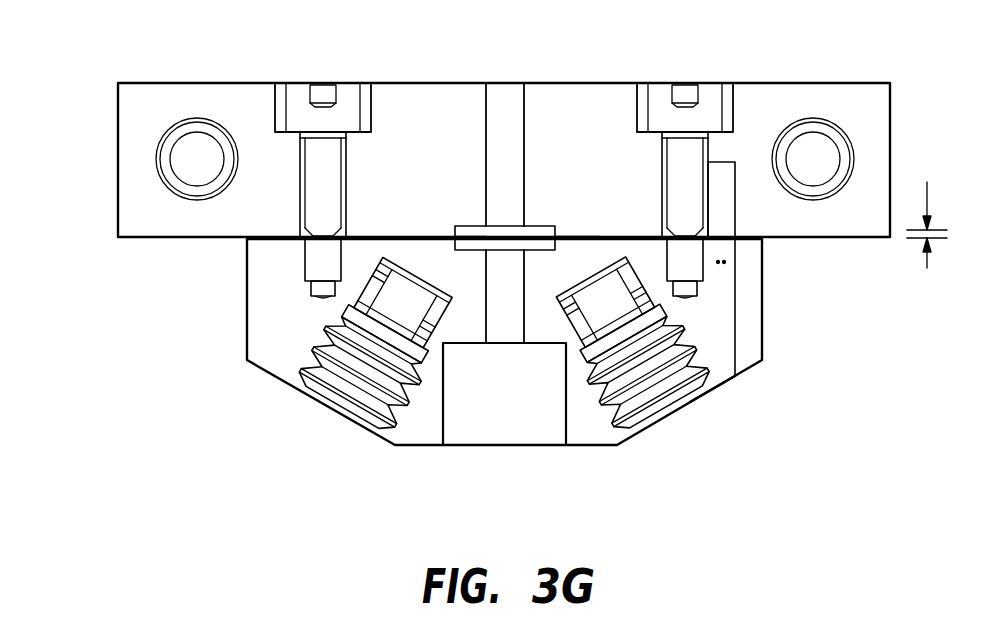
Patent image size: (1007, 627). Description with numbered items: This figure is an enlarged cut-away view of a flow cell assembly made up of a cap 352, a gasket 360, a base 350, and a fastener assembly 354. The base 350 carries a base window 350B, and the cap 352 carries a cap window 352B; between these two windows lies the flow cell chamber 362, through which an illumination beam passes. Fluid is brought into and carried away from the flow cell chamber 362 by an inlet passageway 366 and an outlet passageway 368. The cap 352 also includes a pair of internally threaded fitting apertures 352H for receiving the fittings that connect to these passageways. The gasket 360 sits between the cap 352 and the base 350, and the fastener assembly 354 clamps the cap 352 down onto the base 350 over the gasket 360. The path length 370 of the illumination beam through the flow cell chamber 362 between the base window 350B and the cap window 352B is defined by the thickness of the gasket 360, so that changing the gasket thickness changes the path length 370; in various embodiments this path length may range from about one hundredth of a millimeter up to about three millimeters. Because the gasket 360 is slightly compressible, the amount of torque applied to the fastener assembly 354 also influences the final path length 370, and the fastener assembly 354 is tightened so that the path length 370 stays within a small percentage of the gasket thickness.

The base 350 is at (114, 144).
The base window 350B is at (502, 217).
The cap 352 is at (780, 347).
The cap window 352B is at (505, 256).
The internally threaded fitting apertures 352H is at (685, 393).
The fastener assembly 354 is at (300, 78).
The gasket 360 is at (578, 226).
The flow cell chamber 362 is at (468, 226).
The inlet passageway 366 is at (388, 302).
The outlet passageway 368 is at (616, 295).
The path length 370 is at (927, 210).